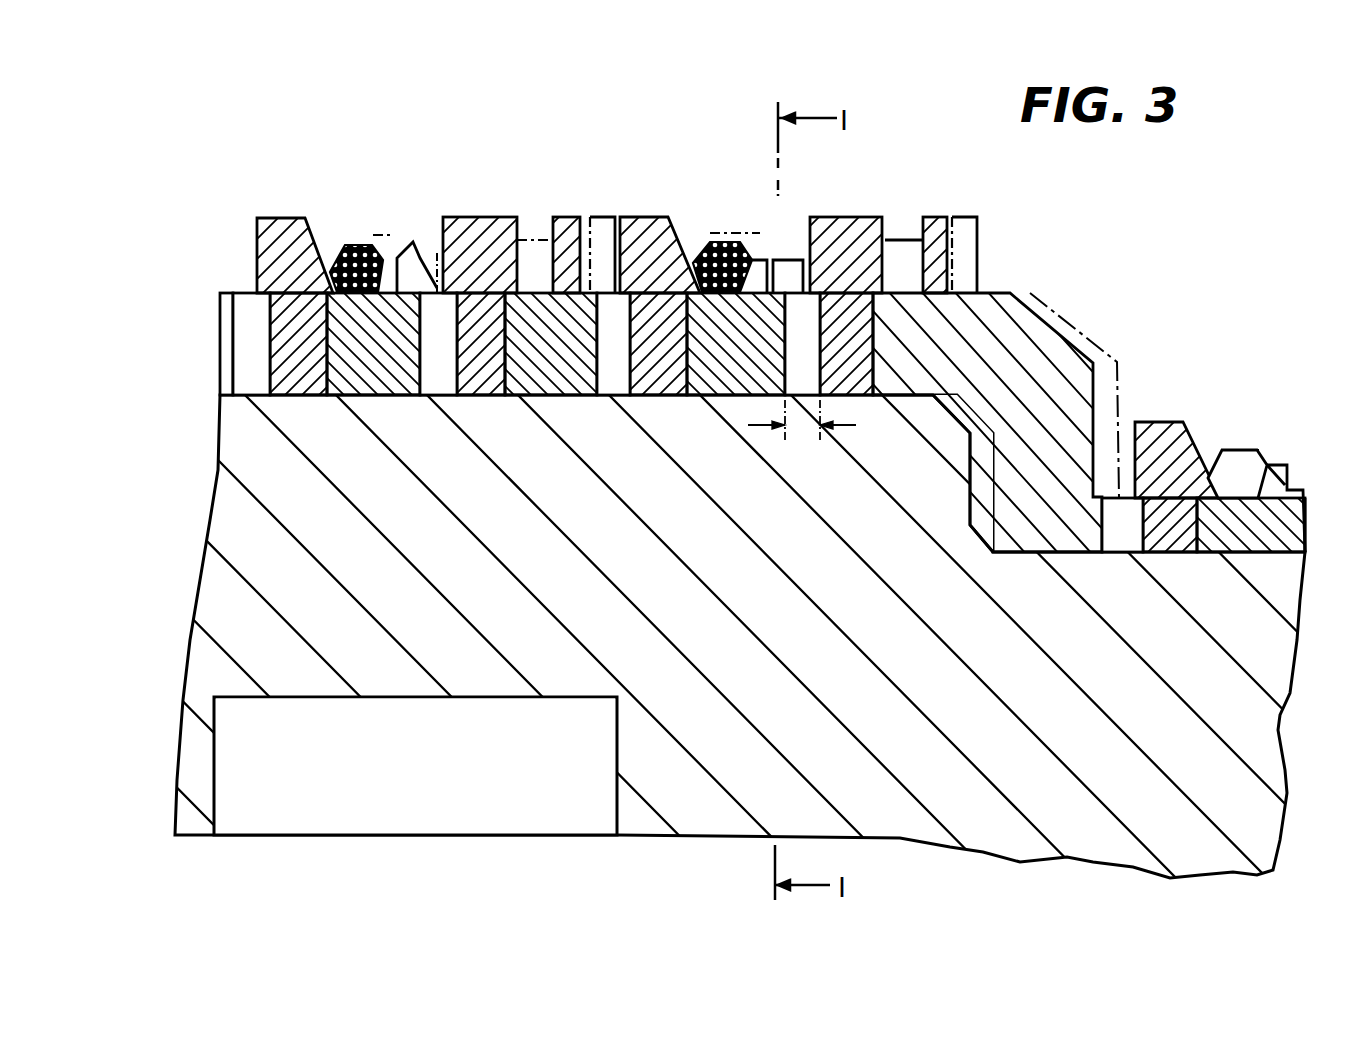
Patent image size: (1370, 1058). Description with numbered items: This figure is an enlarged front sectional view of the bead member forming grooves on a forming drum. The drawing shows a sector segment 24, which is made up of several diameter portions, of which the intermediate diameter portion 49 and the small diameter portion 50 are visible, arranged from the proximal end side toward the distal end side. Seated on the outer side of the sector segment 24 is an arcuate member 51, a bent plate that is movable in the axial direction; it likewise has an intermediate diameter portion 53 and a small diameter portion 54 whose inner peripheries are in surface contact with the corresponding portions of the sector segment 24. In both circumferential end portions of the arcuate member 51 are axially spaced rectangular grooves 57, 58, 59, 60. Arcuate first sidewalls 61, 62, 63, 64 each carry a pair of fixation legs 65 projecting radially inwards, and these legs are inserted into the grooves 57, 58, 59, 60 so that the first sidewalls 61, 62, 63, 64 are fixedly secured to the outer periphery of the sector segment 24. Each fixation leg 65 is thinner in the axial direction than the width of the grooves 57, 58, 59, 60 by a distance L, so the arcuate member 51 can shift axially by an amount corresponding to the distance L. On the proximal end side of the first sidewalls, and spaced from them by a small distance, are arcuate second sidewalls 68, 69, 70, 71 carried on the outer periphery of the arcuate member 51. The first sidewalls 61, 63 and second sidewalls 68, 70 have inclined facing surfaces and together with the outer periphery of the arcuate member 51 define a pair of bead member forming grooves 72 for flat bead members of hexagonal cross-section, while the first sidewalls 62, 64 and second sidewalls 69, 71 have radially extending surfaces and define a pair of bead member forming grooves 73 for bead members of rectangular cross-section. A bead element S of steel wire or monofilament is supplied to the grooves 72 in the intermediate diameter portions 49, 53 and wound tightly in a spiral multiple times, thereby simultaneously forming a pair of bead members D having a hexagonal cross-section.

The sector segment 24 is at (616, 760).
The intermediate diameter portion 49 is at (430, 673).
The small diameter portion 50 is at (1258, 688).
The arcuate member 51 is at (998, 292).
The intermediate diameter portion 53 is at (712, 385).
The small diameter portion 54 is at (1289, 517).
The rectangular groove 57 is at (250, 305).
The rectangular groove 58 is at (428, 380).
The rectangular groove 59 is at (610, 387).
The rectangular groove 60 is at (803, 350).
The first sidewall 61 is at (263, 216).
The first sidewall 62 is at (477, 217).
The first sidewall 63 is at (640, 218).
The first sidewall 64 is at (856, 217).
The fixation leg 65 is at (293, 377).
The second sidewall 68 is at (408, 248).
The second sidewall 69 is at (568, 230).
The second sidewall 70 is at (742, 242).
The second sidewall 71 is at (940, 215).
The bead member forming groove 72 is at (328, 252).
The bead member forming groove 73 is at (542, 250).
The bead element S is at (353, 243).
The bead member D is at (363, 235).
The distance L is at (802, 430).